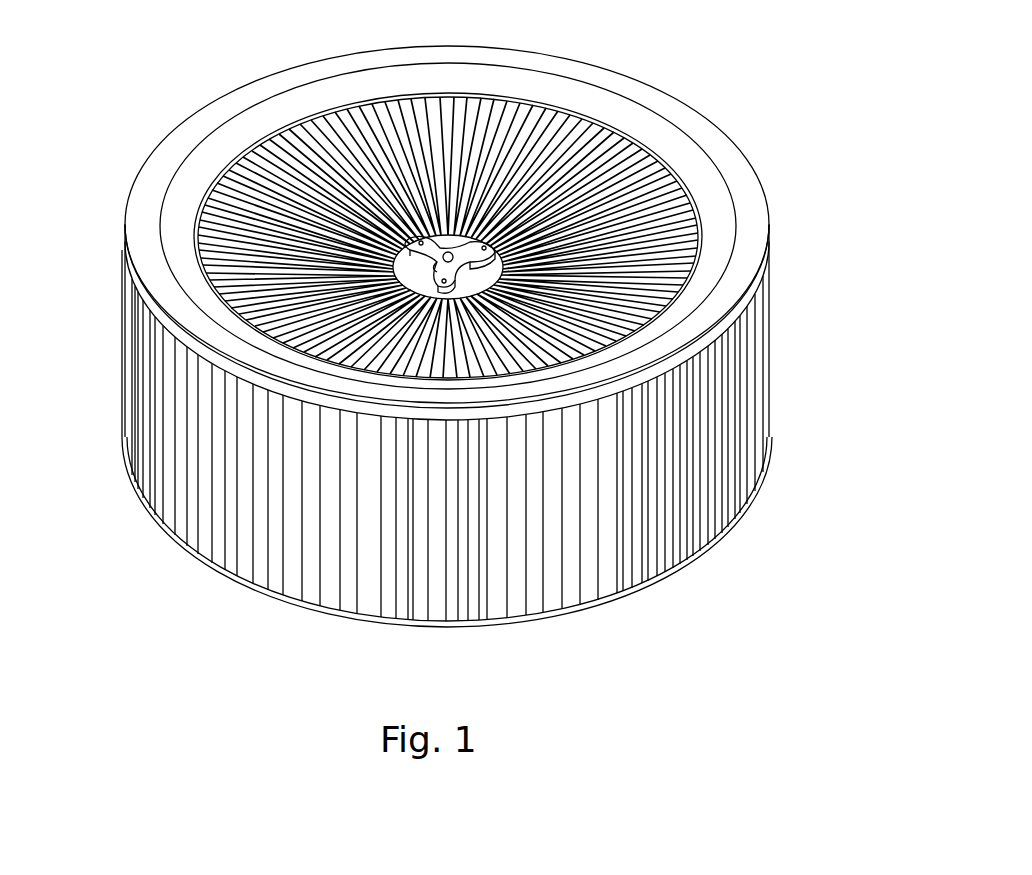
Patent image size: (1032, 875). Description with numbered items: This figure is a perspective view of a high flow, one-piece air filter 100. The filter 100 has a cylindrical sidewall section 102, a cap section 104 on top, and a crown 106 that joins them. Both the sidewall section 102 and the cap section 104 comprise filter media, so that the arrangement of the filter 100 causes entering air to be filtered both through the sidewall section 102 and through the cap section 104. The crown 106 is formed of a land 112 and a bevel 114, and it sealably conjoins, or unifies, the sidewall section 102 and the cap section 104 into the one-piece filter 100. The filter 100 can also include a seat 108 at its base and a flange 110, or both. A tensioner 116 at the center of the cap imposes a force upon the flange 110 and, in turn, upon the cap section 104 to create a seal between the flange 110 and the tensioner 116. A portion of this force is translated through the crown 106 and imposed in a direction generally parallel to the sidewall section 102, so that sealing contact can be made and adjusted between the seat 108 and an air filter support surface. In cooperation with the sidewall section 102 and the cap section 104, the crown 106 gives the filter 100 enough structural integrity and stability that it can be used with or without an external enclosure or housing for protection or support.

The air filter 100 is at (758, 101).
The sidewall section 102 is at (768, 356).
The cap section 104 is at (293, 220).
The crown 106 is at (767, 218).
The seat 108 is at (723, 527).
The flange 110 is at (393, 322).
The land 112 is at (305, 66).
The bevel 114 is at (224, 134).
The tensioner 116 is at (405, 250).